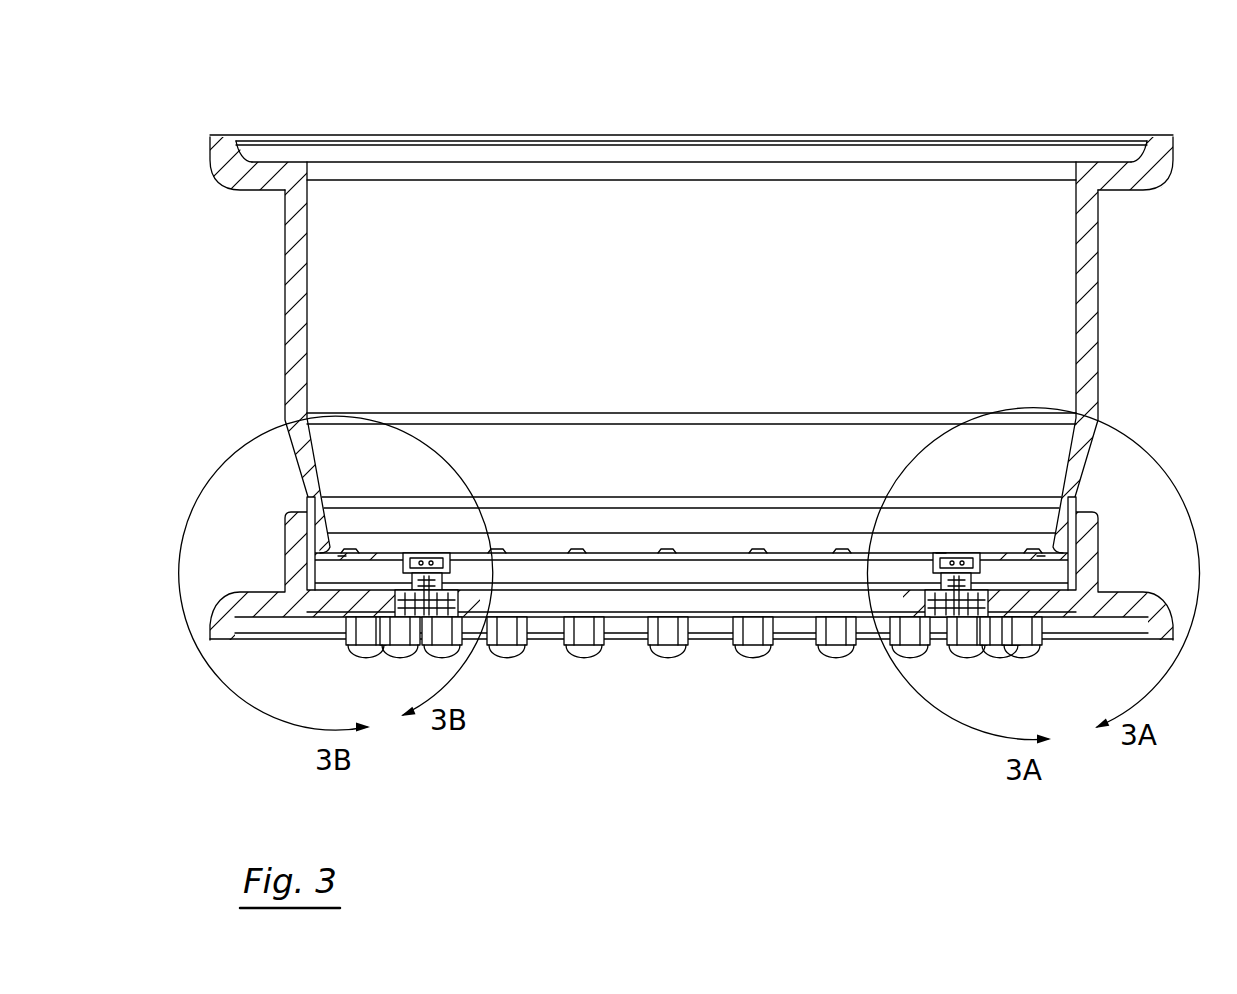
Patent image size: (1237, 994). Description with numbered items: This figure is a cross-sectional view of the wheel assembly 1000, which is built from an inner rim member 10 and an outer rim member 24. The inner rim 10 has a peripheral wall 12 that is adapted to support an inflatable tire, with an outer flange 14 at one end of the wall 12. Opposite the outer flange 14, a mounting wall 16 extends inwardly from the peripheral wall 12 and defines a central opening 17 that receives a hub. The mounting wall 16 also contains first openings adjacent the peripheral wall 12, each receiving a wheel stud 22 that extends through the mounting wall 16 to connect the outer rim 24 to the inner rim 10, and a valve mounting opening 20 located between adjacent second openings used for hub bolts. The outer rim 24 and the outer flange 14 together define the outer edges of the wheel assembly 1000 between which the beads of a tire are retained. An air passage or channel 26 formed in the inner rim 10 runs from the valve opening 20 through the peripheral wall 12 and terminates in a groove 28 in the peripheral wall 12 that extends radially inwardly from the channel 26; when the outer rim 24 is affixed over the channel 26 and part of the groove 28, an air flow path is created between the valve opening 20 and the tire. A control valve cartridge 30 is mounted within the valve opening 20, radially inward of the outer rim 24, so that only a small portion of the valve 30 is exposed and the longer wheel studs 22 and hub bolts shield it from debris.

The wheel assembly 1000 is at (695, 98).
The inner rim member 10 is at (1132, 375).
The peripheral wall 12 is at (284, 300).
The outer flange 14 is at (222, 183).
The mounting wall 16 is at (337, 587).
The central opening 17 is at (605, 570).
The valve mounting opening 20 is at (942, 548).
The wheel stud 22 is at (585, 652).
The outer rim member 24 is at (222, 608).
The air passage or channel 26 is at (343, 565).
The groove 28 is at (313, 513).
The control valve cartridge 30 is at (427, 546).